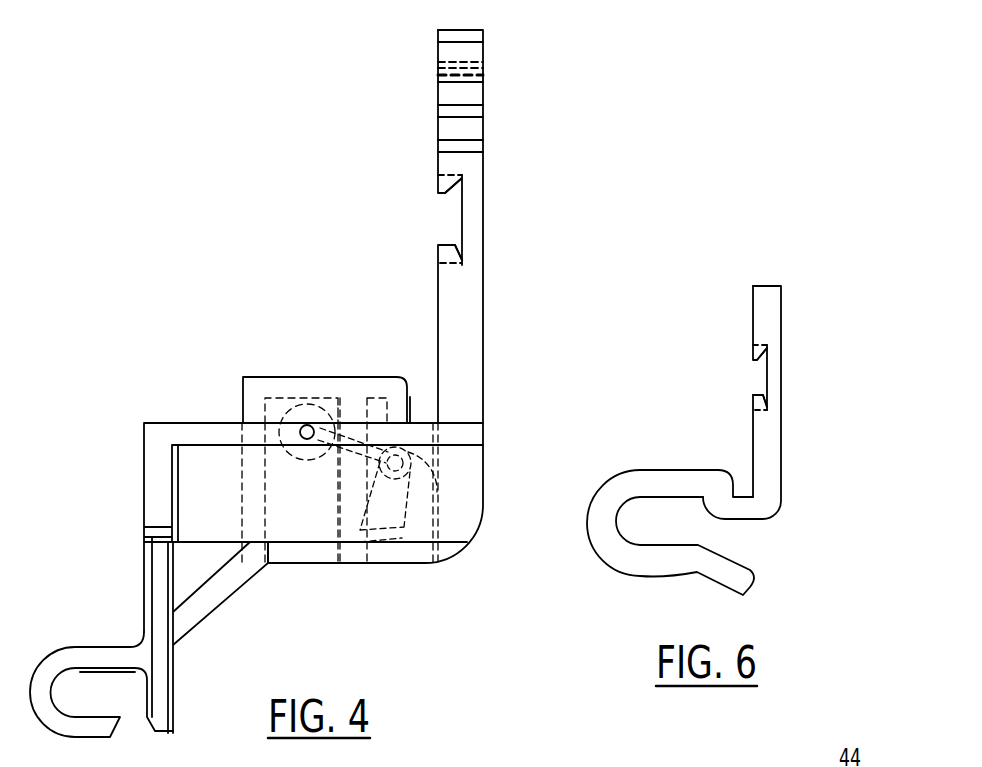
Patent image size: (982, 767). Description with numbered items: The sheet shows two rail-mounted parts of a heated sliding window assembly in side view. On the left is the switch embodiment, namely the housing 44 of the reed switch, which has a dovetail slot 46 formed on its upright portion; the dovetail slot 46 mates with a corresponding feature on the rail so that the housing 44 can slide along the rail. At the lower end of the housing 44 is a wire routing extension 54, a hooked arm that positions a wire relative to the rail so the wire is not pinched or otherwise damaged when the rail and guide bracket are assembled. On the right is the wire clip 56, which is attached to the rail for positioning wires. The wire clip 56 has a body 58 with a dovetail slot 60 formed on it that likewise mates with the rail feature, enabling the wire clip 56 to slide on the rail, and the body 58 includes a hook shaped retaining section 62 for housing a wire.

In FIG. 4, the housing 44 is at (315, 383).
In FIG. 4, the dovetail slot 46 is at (462, 225).
In FIG. 4, the wire routing extension 54 is at (172, 712).
In FIG. 6, the wire clip 56 is at (713, 418).
In FIG. 6, the body 58 is at (772, 457).
In FIG. 6, the dovetail slot 60 is at (767, 387).
In FIG. 6, the hook shaped retaining section 62 is at (613, 488).